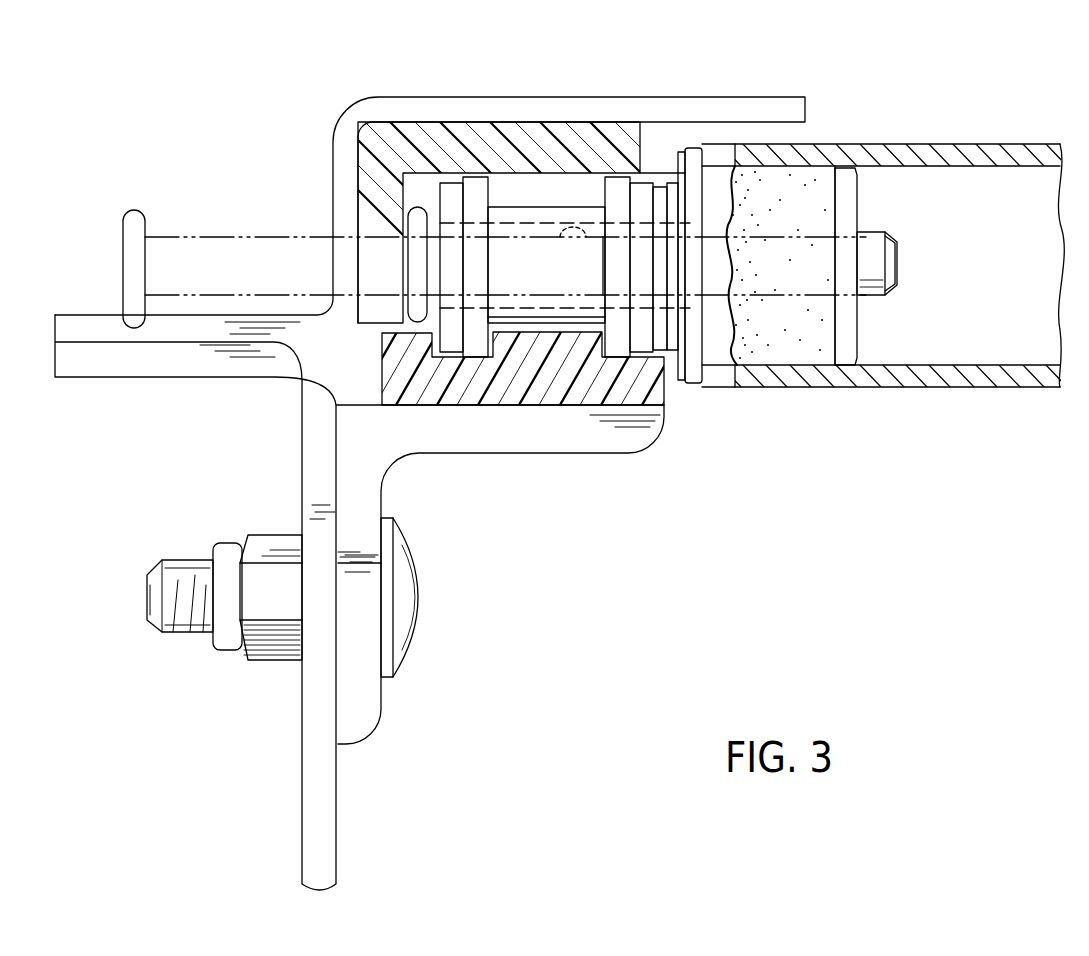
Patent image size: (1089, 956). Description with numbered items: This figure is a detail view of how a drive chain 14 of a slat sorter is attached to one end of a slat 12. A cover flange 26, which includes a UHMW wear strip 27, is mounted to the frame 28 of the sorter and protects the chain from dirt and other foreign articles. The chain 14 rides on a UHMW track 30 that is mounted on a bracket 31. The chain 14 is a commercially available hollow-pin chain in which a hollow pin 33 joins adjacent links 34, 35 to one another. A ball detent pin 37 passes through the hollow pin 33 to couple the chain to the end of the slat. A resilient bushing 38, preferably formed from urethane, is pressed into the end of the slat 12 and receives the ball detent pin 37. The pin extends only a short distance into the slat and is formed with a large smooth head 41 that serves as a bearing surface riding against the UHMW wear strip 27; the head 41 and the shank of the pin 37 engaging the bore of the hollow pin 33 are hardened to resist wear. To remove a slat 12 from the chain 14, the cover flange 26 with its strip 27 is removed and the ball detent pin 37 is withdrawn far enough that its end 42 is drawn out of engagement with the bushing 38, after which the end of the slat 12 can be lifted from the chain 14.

The slat 12 is at (838, 145).
The drive chain 14 is at (528, 195).
The cover flange 26 is at (412, 112).
The UHMW wear strip 27 is at (560, 132).
The frame 28 is at (312, 455).
The UHMW track 30 is at (512, 378).
The bracket 31 is at (419, 441).
The hollow pin 33 is at (570, 218).
The link 34 is at (447, 205).
The link 35 is at (463, 183).
The ball detent pin 37 is at (867, 247).
The resilient bushing 38 is at (772, 343).
The head 41 is at (415, 262).
The end of the pin 42 is at (897, 258).